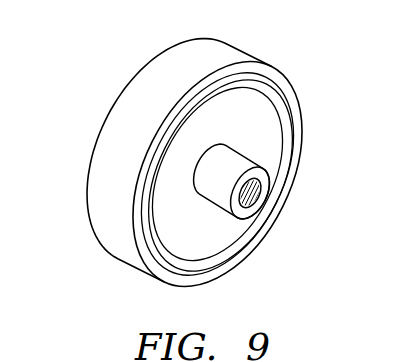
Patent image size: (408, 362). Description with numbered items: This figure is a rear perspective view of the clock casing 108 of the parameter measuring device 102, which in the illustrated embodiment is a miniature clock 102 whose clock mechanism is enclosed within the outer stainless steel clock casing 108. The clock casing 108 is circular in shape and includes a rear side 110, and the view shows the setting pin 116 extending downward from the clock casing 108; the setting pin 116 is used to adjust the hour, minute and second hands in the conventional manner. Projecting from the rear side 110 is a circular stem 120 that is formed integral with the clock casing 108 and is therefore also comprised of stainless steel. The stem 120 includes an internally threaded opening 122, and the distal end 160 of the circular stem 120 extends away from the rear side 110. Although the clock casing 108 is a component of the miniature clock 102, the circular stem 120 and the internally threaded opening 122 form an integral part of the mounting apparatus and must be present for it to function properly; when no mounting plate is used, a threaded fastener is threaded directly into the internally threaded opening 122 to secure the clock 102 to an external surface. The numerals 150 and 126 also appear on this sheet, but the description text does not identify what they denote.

The parameter measuring device 102 is at (145, 72).
The clock casing 108 is at (113, 141).
The rear side 110 is at (266, 113).
The setting pin 116 is at (203, 280).
The circular stem 120 is at (258, 174).
The internally threaded opening 122 is at (257, 199).
The distal end 160 is at (250, 212).
The frame member 150 is at (352, 361).
The axle 126 is at (375, 5).